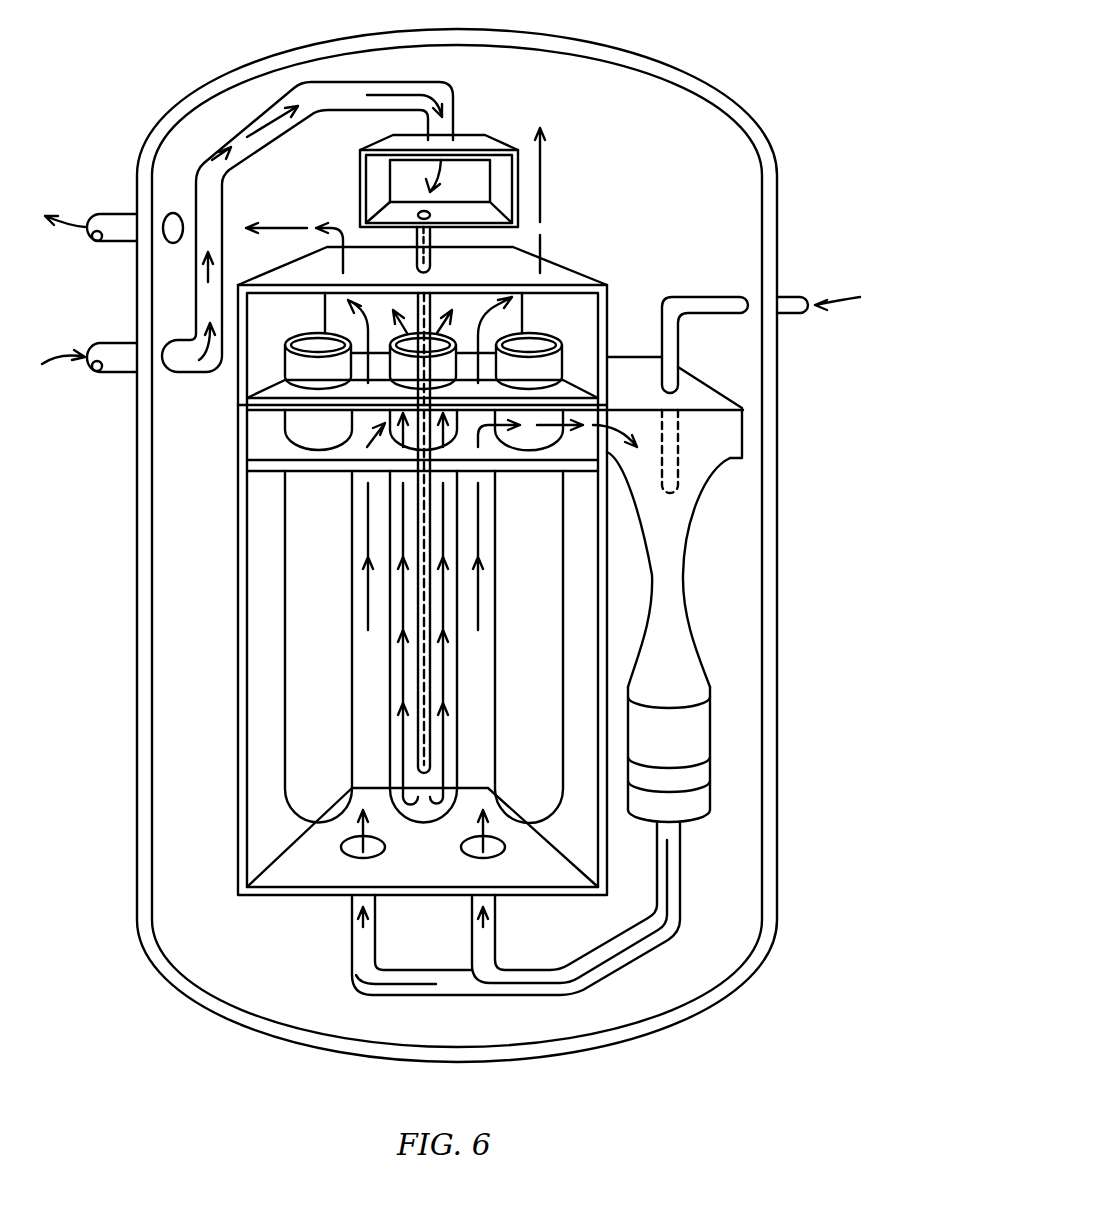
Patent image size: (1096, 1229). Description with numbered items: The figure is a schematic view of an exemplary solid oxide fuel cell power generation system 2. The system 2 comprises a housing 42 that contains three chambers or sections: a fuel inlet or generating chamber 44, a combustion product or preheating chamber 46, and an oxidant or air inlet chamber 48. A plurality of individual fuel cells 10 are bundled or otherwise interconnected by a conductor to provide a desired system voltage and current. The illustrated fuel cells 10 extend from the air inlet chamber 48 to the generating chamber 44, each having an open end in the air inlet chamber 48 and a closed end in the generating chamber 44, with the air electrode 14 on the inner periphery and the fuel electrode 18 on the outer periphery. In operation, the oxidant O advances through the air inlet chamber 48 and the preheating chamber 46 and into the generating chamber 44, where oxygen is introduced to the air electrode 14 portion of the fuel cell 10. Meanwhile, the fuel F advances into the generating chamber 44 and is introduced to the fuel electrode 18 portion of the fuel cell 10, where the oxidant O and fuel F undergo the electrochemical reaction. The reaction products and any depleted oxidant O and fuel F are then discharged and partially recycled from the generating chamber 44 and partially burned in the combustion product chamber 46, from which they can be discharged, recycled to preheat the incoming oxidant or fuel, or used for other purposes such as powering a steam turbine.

The solid oxide fuel cell power generation system 2 is at (449, 538).
The fuel cell 10 is at (542, 647).
The air electrode 14 is at (415, 743).
The fuel electrode 18 is at (390, 680).
The housing 42 is at (778, 870).
The generating chamber 44 is at (477, 722).
The combustion product chamber 46 is at (590, 440).
The air inlet chamber 48 is at (582, 340).
The fuel F is at (761, 327).
The oxidant O is at (87, 306).